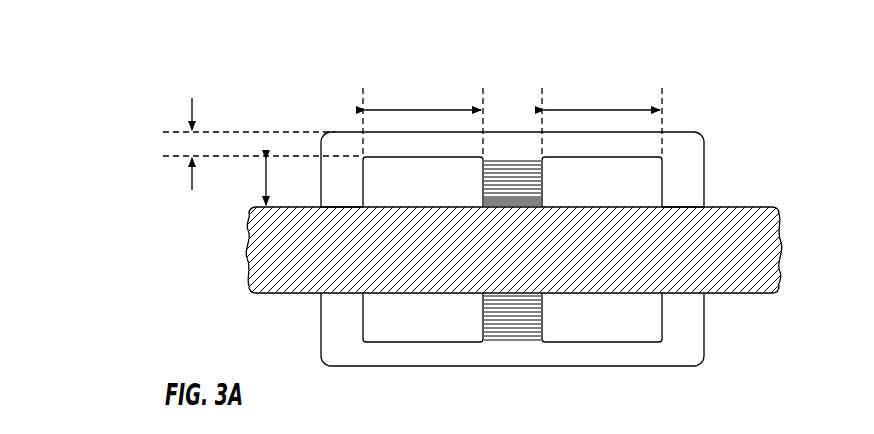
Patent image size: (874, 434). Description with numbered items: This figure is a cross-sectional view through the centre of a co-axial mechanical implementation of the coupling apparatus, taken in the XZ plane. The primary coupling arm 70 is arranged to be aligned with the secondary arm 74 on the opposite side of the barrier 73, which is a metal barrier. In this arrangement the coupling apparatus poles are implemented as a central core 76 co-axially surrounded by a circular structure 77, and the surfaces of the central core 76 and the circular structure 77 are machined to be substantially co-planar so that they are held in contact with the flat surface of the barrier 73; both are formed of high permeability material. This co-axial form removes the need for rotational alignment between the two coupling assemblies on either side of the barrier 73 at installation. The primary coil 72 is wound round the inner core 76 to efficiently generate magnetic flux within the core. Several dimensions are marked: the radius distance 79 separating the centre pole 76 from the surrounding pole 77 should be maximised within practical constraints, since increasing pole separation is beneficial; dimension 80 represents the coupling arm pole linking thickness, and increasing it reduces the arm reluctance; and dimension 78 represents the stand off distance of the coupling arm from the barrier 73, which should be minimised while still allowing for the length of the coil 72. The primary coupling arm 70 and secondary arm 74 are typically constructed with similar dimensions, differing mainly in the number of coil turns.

The primary coupling arm 70 is at (692, 165).
The primary coil 72 is at (504, 183).
The barrier 73 is at (781, 230).
The secondary arm 74 is at (683, 327).
The central core 76 is at (488, 203).
The circular structure 77 is at (332, 203).
The stand off distance 78 is at (265, 182).
The radius distance 79 is at (422, 110).
The coupling arm pole linking thickness 80 is at (262, 131).